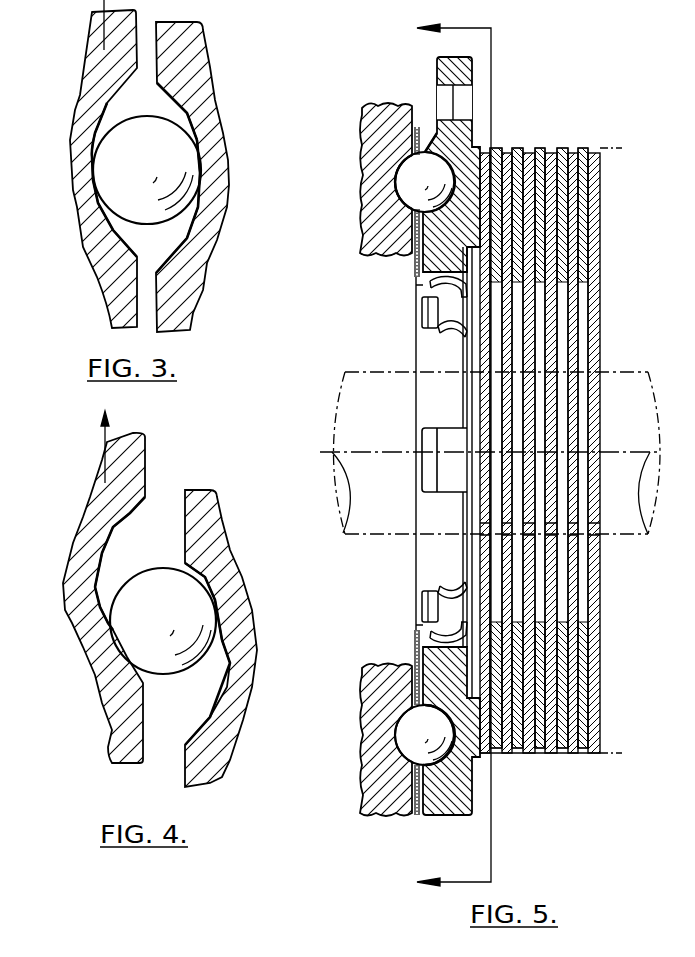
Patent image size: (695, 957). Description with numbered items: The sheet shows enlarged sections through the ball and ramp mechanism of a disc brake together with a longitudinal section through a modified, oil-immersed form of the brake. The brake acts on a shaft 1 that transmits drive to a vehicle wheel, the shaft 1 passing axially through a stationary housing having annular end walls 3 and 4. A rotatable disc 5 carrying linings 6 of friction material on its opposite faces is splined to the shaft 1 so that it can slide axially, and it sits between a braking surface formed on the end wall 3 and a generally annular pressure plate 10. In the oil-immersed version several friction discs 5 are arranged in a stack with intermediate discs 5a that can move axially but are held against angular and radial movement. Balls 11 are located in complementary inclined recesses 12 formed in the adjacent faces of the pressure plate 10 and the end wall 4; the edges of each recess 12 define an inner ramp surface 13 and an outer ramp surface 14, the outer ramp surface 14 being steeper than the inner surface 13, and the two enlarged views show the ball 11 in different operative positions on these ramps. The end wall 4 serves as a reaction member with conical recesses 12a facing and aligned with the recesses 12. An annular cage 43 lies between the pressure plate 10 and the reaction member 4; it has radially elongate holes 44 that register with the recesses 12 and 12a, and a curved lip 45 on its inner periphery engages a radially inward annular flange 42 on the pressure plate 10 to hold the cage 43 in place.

In FIG. 5, the shaft 1 is at (622, 387).
In FIG. 3, the end wall 3 is at (76, 118).
In FIG. 5, the end wall 4 is at (387, 123).
In FIG. 5, the rotatable disc 5 is at (576, 147).
In FIG. 5, the intermediate disc 5a is at (580, 762).
In FIG. 5, the linings 6 is at (543, 131).
In FIG. 5, the pressure plate 10 is at (433, 811).
In FIG. 3, the balls 11 is at (132, 203).
In FIG. 4, the balls 11 is at (188, 603).
In FIG. 5, the balls 11 is at (400, 205).
In FIG. 3, the inclined recesses 12 is at (190, 95).
In FIG. 4, the inclined recesses 12 is at (89, 610).
In FIG. 5, the inclined recesses 12 is at (458, 145).
In FIG. 5, the conical recesses 12a is at (418, 197).
In FIG. 3, the inner ramp surfaces 13 is at (206, 200).
In FIG. 4, the inner ramp surfaces 13 is at (100, 565).
In FIG. 5, the inner ramp surfaces 13 is at (478, 762).
In FIG. 3, the outer ramp surfaces 14 is at (146, 171).
In FIG. 4, the outer ramp surfaces 14 is at (90, 496).
In FIG. 5, the outer ramp surfaces 14 is at (441, 452).
In FIG. 5, the annular flange 42 is at (433, 643).
In FIG. 5, the cage 43 is at (415, 276).
In FIG. 5, the holes 44 is at (404, 233).
In FIG. 5, the curved lip 45 is at (422, 292).